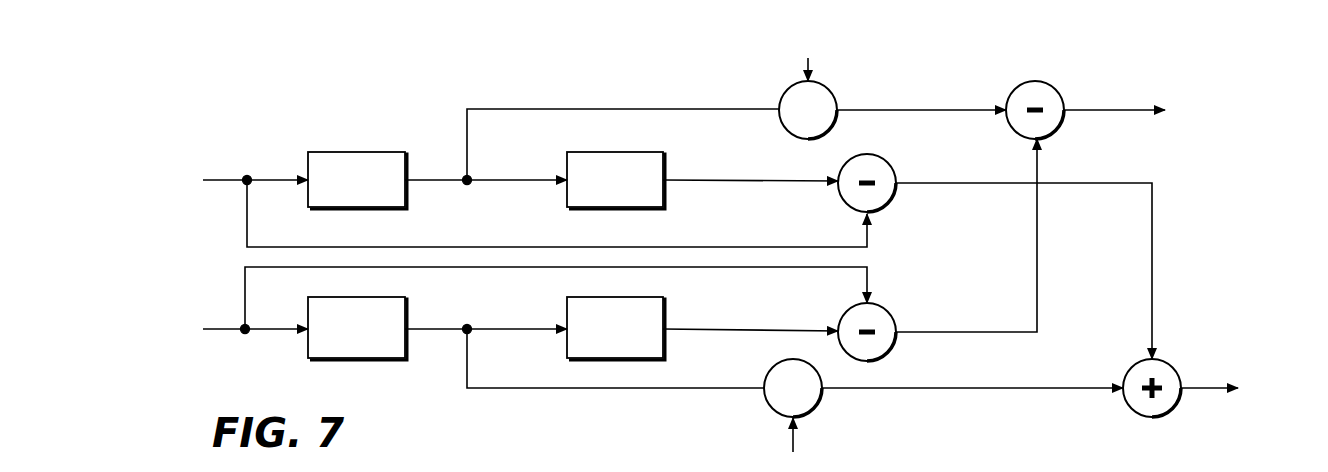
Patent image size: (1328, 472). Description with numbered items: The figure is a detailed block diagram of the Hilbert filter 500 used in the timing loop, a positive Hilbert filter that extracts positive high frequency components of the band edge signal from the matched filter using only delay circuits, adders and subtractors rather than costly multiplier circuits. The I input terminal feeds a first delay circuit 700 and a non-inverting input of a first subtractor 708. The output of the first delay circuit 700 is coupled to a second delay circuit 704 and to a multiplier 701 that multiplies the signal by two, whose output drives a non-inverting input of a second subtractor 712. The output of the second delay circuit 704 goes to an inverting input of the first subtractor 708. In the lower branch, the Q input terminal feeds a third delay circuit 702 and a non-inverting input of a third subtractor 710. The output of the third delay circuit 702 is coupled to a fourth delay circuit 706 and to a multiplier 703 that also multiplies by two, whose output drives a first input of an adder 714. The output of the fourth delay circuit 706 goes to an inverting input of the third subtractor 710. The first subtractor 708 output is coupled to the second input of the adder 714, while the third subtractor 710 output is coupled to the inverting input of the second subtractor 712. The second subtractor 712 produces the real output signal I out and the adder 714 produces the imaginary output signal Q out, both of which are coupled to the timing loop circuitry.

The Hilbert filter 500 is at (316, 66).
The first delay circuit 700 is at (353, 150).
The multiplier 701 is at (793, 83).
The third delay circuit 702 is at (407, 306).
The multiplier 703 is at (820, 403).
The second delay circuit 704 is at (595, 152).
The fourth delay circuit 706 is at (666, 300).
The first subtractor 708 is at (881, 159).
The third subtractor 710 is at (882, 309).
The second subtractor 712 is at (1056, 87).
The adder 714 is at (1175, 368).